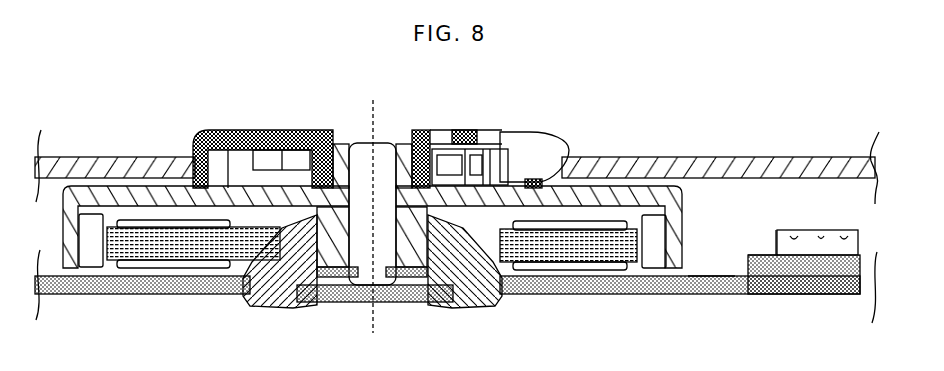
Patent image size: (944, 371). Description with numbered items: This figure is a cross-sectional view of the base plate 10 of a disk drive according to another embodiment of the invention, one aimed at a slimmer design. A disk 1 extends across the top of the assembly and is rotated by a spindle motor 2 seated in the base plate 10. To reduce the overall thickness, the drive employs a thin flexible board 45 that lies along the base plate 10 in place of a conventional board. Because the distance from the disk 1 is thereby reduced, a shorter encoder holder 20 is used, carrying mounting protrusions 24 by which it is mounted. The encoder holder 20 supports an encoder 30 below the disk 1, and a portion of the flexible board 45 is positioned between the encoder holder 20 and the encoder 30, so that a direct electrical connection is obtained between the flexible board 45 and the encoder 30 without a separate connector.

The disk 1 is at (76, 146).
The spindle motor 2 is at (528, 116).
The base plate 10 is at (128, 295).
The encoder holder 20 is at (828, 296).
The mounting protrusions 24 is at (762, 253).
The encoder 30 is at (845, 230).
The flexible board 45 is at (705, 276).